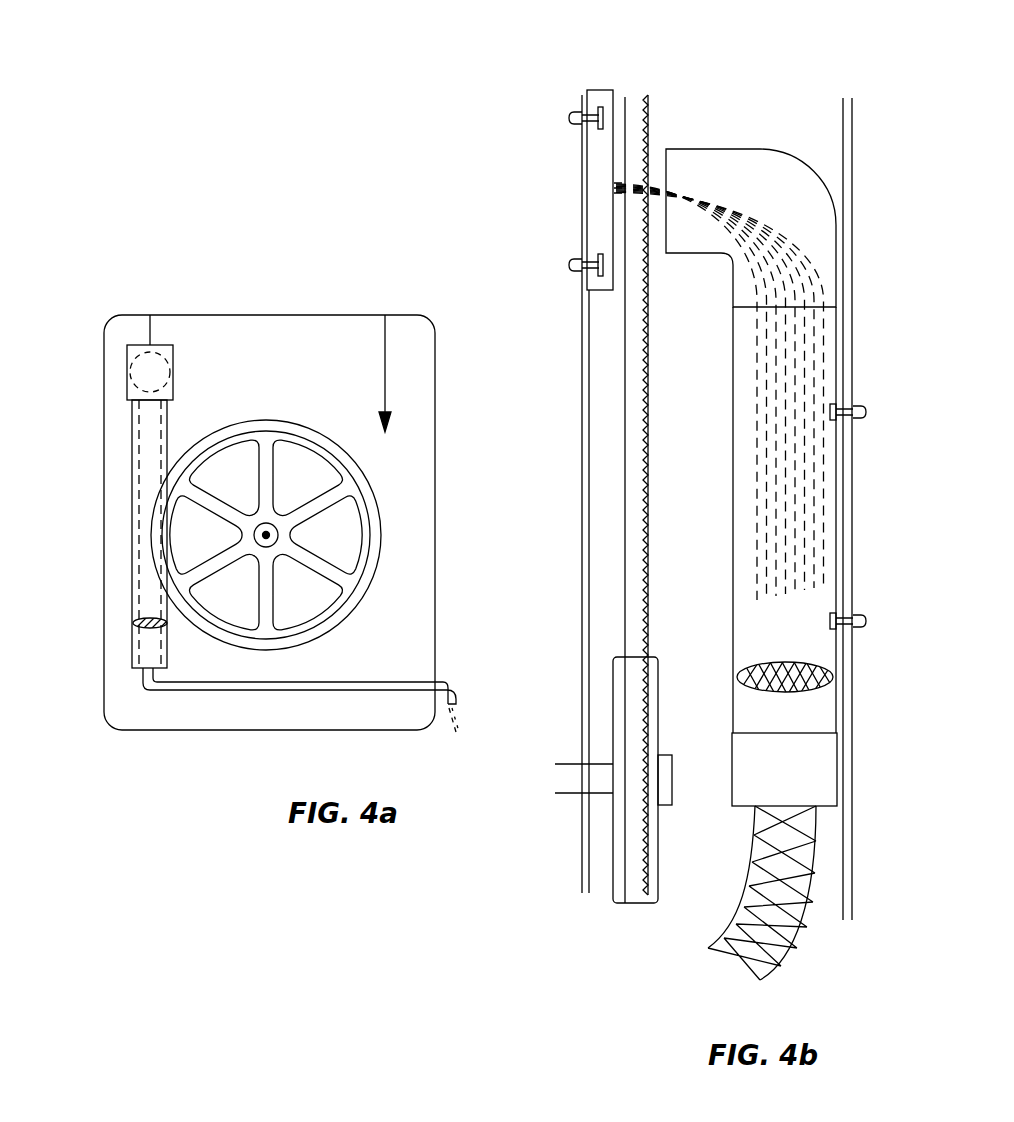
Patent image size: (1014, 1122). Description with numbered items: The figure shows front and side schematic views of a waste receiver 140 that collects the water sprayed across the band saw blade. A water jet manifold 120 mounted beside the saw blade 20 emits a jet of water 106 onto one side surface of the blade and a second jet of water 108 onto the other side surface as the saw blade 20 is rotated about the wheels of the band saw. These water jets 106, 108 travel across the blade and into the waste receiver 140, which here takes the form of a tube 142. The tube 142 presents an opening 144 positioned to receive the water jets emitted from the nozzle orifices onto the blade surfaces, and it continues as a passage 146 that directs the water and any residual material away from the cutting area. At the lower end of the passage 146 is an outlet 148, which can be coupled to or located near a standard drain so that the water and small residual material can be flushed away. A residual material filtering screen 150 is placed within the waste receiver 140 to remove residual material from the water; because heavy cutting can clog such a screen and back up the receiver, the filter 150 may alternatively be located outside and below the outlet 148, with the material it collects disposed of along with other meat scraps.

In FIG. 4b, the saw blade 20 is at (635, 455).
In FIG. 4b, the jet of water 106 is at (780, 373).
In FIG. 4b, the jet of water 108 is at (803, 222).
In FIG. 4b, the water jet manifold 120 is at (598, 158).
In FIG. 4a, the waste receiver 140 is at (126, 778).
In FIG. 4b, the waste receiver 140 is at (720, 72).
In FIG. 4a, the tube 142 is at (167, 426).
In FIG. 4b, the tube 142 is at (778, 152).
In FIG. 4a, the opening 144 is at (140, 350).
In FIG. 4b, the opening 144 is at (662, 218).
In FIG. 4a, the passage 146 is at (143, 468).
In FIG. 4b, the passage 146 is at (805, 636).
In FIG. 4a, the outlet 148 is at (452, 682).
In FIG. 4a, the residual material filtering screen 150 is at (146, 625).
In FIG. 4b, the residual material filtering screen 150 is at (800, 690).